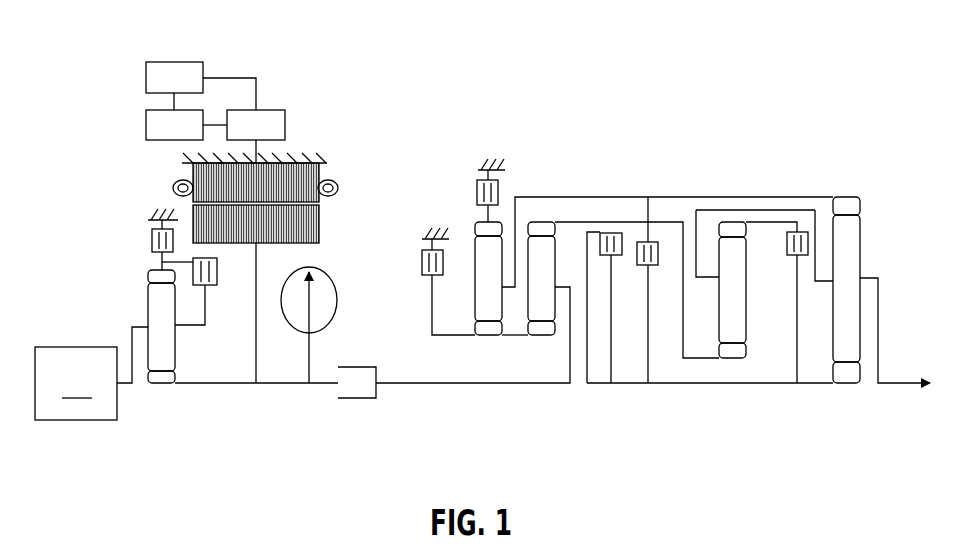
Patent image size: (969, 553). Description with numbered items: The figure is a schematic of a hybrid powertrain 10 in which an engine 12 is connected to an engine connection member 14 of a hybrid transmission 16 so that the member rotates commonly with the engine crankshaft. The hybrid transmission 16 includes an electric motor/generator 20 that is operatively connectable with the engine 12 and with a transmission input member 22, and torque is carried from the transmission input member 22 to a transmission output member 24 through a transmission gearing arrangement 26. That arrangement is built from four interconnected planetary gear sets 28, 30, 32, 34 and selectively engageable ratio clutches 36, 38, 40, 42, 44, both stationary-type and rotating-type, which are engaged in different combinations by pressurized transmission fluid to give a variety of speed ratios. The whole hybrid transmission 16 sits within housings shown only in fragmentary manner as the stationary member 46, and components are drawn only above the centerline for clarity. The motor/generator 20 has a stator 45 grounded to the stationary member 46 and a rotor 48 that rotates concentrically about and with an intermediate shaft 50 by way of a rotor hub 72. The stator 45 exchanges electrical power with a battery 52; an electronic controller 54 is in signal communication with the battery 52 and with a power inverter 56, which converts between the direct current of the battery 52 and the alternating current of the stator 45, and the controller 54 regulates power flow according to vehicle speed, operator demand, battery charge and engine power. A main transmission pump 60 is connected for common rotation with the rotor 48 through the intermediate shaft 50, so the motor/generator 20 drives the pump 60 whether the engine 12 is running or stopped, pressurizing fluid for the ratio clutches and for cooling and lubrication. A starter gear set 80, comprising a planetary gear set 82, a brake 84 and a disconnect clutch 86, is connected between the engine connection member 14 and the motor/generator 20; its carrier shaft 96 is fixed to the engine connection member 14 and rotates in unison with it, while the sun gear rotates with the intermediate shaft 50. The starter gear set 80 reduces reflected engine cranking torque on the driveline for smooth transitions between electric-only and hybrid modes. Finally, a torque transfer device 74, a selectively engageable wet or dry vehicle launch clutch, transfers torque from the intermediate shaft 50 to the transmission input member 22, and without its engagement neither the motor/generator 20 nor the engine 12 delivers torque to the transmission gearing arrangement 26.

The hybrid powertrain 10 is at (454, 52).
The engine 12 is at (76, 383).
The engine connection member 14 is at (125, 385).
The hybrid transmission 16 is at (558, 192).
The electric motor/generator 20 is at (326, 130).
The transmission input member 22 is at (440, 385).
The transmission output member 24 is at (885, 385).
The transmission gearing arrangement 26 is at (707, 180).
The planetary gear set 28 is at (485, 348).
The planetary gear set 30 is at (540, 348).
The planetary gear set 32 is at (737, 365).
The planetary gear set 34 is at (830, 360).
The ratio clutch 36 is at (415, 268).
The ratio clutch 38 is at (470, 193).
The ratio clutch 40 is at (615, 228).
The ratio clutch 42 is at (657, 237).
The ratio clutch 44 is at (805, 225).
The stator 45 is at (322, 176).
The stationary member 46 is at (150, 212).
The rotor 48 is at (320, 225).
The intermediate shaft 50 is at (283, 385).
The battery 52 is at (170, 140).
The electronic controller 54 is at (166, 62).
The power inverter 56 is at (268, 110).
The main transmission pump 60 is at (333, 318).
The rotor hub 72 is at (250, 337).
The torque transfer device 74 is at (368, 401).
The starter gear set 80 is at (85, 297).
The planetary gear set 82 is at (148, 305).
The brake 84 is at (150, 238).
The disconnect clutch 86 is at (217, 268).
The carrier shaft 96 is at (225, 385).